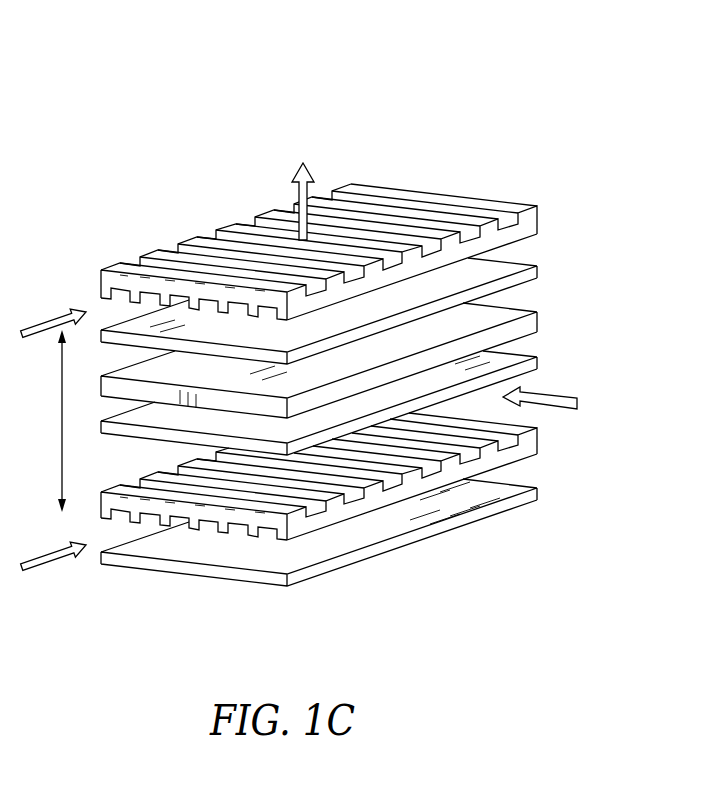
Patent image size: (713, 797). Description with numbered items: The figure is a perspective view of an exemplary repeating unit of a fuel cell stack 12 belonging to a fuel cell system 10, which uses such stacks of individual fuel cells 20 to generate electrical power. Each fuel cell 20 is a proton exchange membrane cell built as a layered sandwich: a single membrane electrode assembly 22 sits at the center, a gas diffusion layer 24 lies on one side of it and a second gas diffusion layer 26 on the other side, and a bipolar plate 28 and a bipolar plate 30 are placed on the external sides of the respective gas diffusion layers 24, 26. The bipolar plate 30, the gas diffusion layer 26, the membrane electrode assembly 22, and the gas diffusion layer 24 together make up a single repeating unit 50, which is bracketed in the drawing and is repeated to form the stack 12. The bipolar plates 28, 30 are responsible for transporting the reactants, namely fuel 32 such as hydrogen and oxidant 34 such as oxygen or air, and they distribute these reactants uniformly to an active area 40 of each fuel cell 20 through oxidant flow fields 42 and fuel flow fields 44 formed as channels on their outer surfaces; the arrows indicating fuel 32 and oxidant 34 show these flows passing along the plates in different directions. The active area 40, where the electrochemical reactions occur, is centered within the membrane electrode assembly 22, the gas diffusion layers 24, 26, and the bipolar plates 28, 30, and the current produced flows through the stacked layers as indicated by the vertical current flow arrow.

The fuel cell system 10 is at (4, 224).
The fuel cell stack 12 is at (148, 195).
The fuel cell 20 is at (357, 356).
The membrane electrode assembly 22 is at (540, 319).
The gas diffusion layer 24 is at (540, 273).
The gas diffusion layer 26 is at (540, 364).
The bipolar plate 28 is at (540, 217).
The bipolar plate 30 is at (540, 441).
The fuel 32 is at (550, 394).
The oxidant 34 is at (50, 336).
The active area 40 is at (60, 434).
The oxidant flow fields 42 is at (147, 528).
The fuel flow fields 44 is at (440, 186).
The repeating unit 50 is at (638, 237).